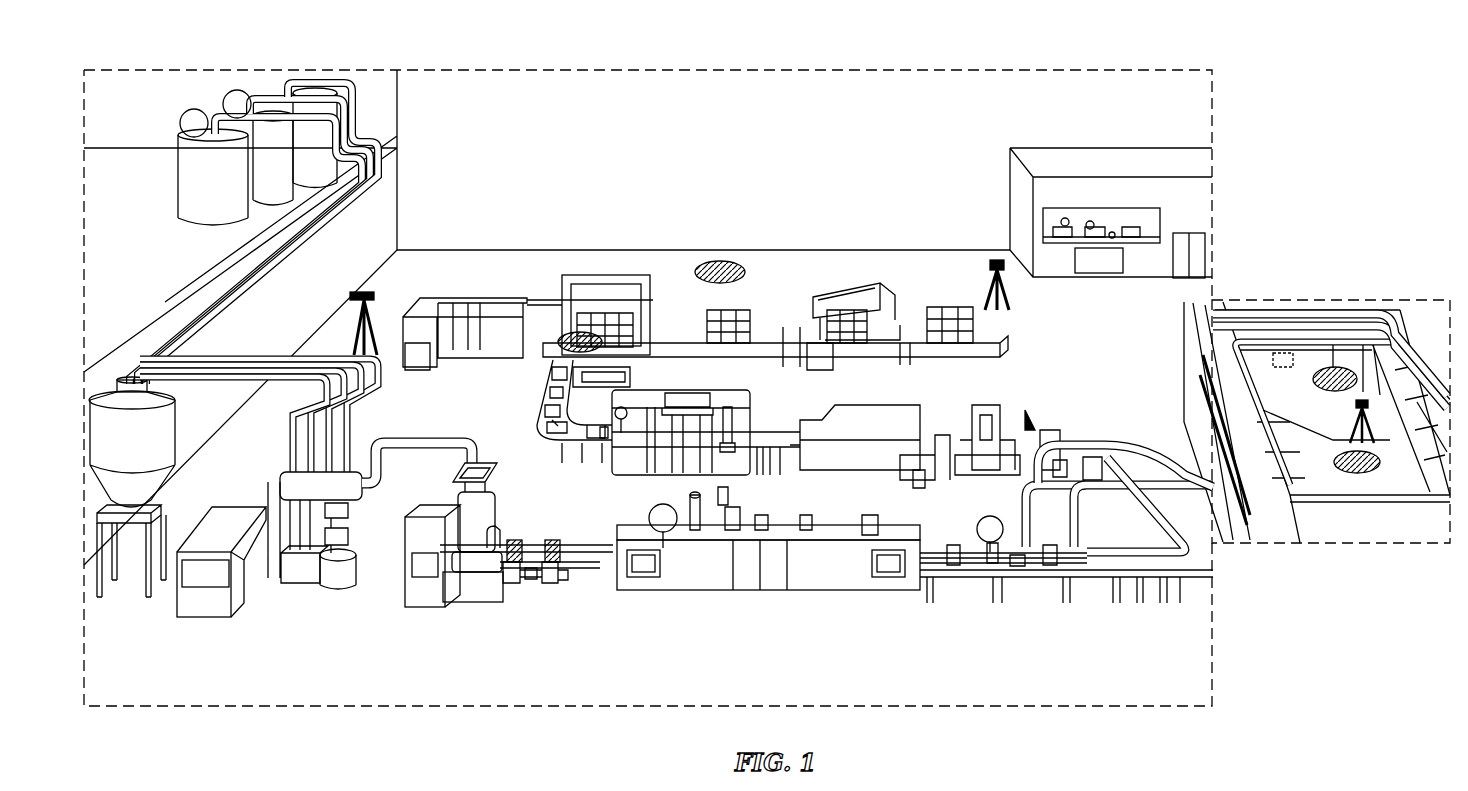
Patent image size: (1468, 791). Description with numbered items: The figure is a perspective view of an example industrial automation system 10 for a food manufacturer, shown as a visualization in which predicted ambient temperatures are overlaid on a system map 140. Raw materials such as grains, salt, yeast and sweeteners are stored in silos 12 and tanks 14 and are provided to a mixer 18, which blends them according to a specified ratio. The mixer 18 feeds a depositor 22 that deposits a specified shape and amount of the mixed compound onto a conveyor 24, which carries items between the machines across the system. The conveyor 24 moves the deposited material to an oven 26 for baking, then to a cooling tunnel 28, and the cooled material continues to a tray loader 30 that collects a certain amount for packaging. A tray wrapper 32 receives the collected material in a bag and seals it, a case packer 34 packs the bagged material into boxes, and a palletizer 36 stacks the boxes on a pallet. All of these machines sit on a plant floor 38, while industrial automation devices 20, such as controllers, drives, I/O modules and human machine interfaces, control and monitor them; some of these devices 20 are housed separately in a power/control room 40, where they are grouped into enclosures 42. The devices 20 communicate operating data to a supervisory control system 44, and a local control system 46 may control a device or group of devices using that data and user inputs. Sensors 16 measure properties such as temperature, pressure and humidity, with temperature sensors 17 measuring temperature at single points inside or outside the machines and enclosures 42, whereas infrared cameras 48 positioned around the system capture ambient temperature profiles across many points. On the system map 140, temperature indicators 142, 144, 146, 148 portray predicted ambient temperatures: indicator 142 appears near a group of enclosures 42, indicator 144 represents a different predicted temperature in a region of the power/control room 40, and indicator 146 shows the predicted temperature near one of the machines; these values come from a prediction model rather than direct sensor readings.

The industrial automation system 10 is at (820, 58).
The silos 12 is at (292, 92).
The tanks 14 is at (186, 437).
The sensors 16 is at (990, 514).
The temperature sensors 17 is at (193, 108).
The mixer 18 is at (360, 592).
The industrial automation devices 20 is at (195, 622).
The depositor 22 is at (576, 585).
The conveyor 24 is at (778, 425).
The oven 26 is at (838, 515).
The cooling tunnel 28 is at (1080, 580).
The tray loader 30 is at (1030, 400).
The tray wrapper 32 is at (858, 420).
The case packer 34 is at (620, 482).
The palletizer 36 is at (550, 290).
The plant floor 38 is at (820, 268).
The power/control room 40 is at (1333, 440).
The enclosures 42 is at (1262, 304).
The supervisory control system 44 is at (1112, 215).
The local control system 46 is at (212, 588).
The infrared (IR) cameras 48 is at (360, 292).
The system map 140 is at (993, 70).
The temperature indicator 142 is at (1343, 366).
The temperature indicator 144 is at (1360, 473).
The temperature indicator 146 is at (558, 343).
The temperature indicator 148 is at (723, 262).